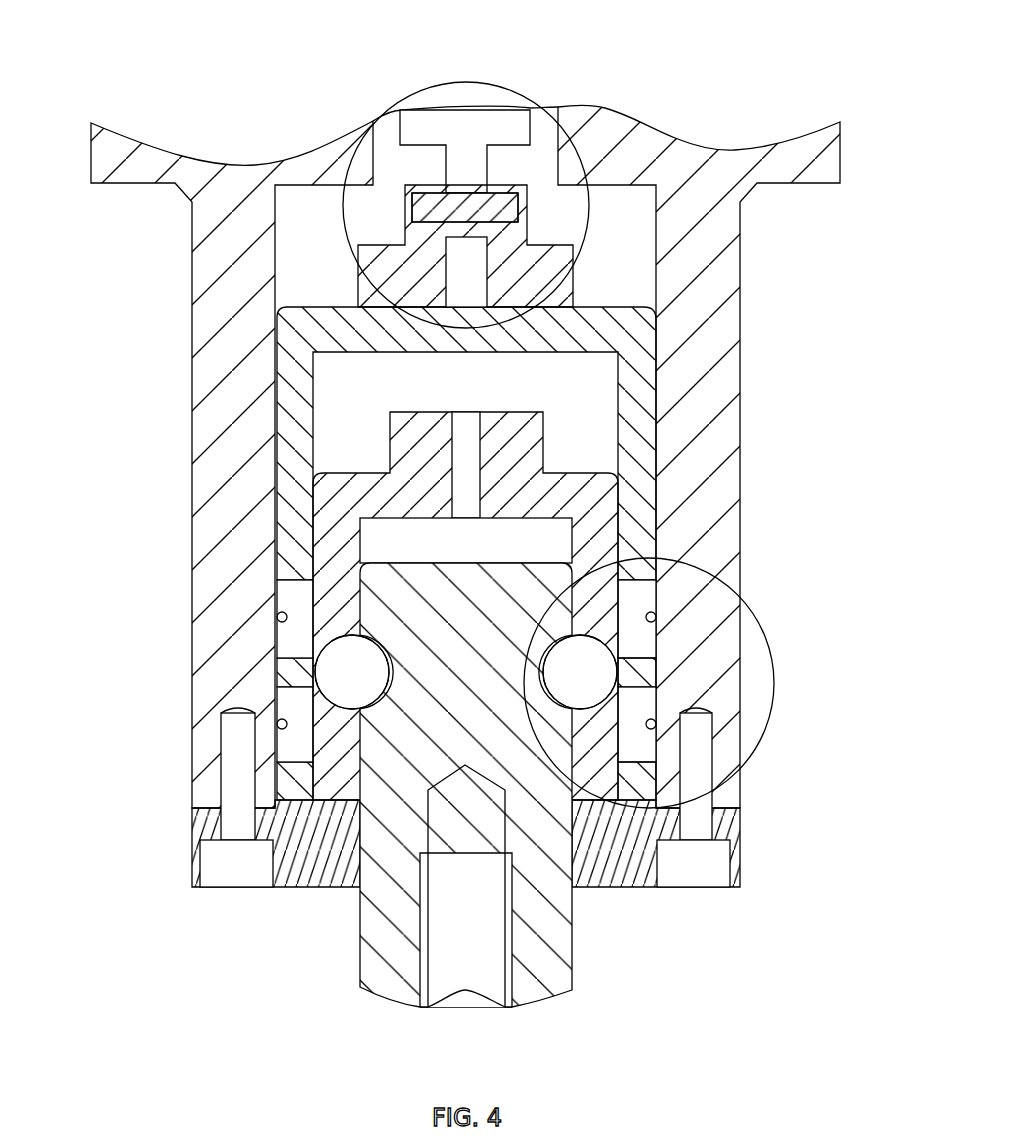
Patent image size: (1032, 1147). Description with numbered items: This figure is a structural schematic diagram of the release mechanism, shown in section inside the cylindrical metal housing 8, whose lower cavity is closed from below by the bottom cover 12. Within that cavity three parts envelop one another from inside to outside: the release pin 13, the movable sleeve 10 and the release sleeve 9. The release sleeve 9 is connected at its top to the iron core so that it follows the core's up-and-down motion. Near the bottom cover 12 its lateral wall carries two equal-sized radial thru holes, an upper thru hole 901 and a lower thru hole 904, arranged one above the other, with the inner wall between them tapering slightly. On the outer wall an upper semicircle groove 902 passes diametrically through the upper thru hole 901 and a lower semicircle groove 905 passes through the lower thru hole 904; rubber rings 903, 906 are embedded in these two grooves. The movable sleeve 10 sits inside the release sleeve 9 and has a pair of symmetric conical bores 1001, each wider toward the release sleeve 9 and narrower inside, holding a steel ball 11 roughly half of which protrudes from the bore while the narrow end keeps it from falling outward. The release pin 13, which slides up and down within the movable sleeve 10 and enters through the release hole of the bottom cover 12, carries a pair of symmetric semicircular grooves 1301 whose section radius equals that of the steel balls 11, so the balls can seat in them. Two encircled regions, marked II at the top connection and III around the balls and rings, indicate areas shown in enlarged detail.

The metal housing 8 is at (236, 290).
The release sleeve 9 is at (288, 362).
The movable sleeve 10 is at (415, 448).
The conical bore 1001 is at (320, 640).
The steel ball 11 is at (327, 675).
The semicircular groove 1301 is at (393, 672).
The bottom cover 12 is at (323, 842).
The release pin 13 is at (380, 943).
The upper radial thru hole 901 is at (657, 597).
The upper semicircle groove 902 is at (655, 617).
The rubber ring 903 is at (657, 660).
The lower radial thru hole 904 is at (657, 688).
The lower semicircle groove 905 is at (655, 725).
The rubber ring 906 is at (696, 710).
The detail view II circle II is at (533, 102).
The detail view III circle III is at (762, 735).